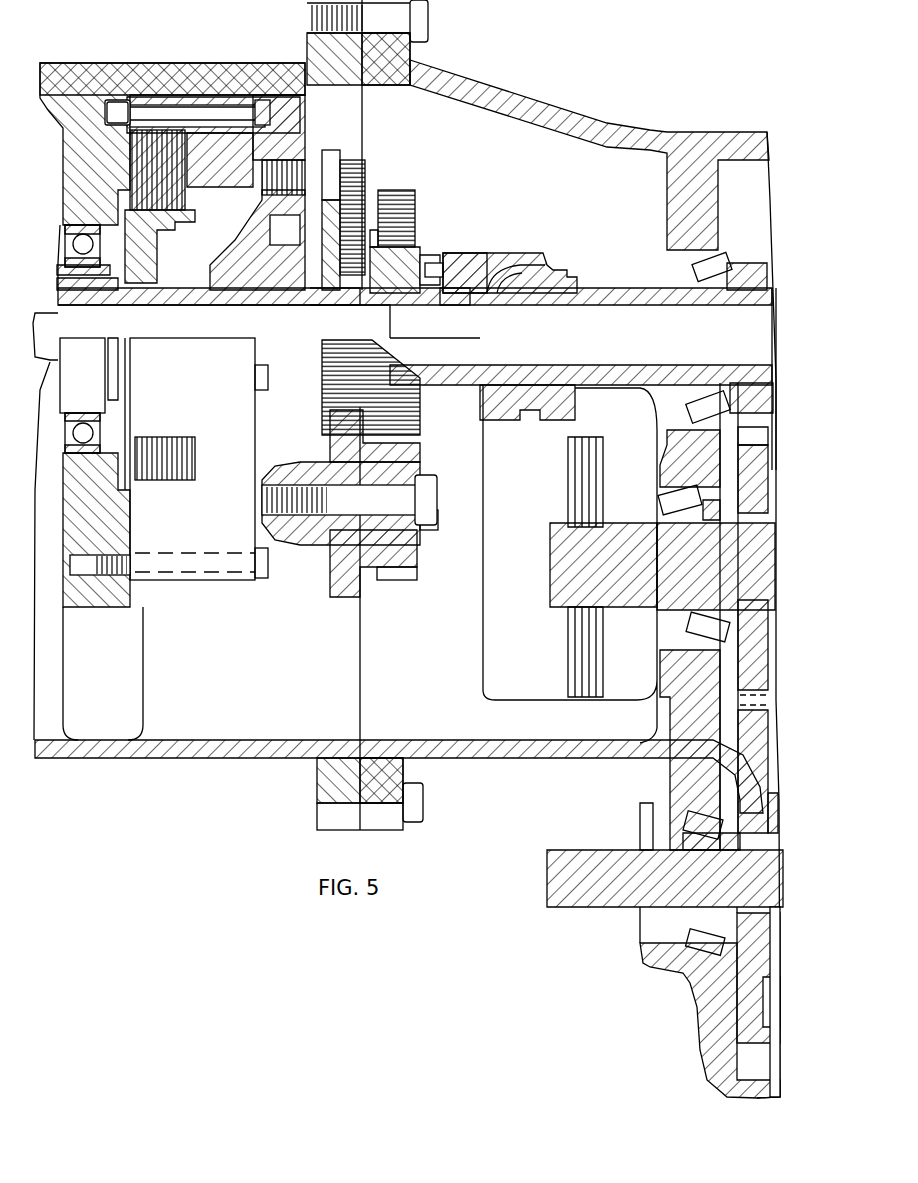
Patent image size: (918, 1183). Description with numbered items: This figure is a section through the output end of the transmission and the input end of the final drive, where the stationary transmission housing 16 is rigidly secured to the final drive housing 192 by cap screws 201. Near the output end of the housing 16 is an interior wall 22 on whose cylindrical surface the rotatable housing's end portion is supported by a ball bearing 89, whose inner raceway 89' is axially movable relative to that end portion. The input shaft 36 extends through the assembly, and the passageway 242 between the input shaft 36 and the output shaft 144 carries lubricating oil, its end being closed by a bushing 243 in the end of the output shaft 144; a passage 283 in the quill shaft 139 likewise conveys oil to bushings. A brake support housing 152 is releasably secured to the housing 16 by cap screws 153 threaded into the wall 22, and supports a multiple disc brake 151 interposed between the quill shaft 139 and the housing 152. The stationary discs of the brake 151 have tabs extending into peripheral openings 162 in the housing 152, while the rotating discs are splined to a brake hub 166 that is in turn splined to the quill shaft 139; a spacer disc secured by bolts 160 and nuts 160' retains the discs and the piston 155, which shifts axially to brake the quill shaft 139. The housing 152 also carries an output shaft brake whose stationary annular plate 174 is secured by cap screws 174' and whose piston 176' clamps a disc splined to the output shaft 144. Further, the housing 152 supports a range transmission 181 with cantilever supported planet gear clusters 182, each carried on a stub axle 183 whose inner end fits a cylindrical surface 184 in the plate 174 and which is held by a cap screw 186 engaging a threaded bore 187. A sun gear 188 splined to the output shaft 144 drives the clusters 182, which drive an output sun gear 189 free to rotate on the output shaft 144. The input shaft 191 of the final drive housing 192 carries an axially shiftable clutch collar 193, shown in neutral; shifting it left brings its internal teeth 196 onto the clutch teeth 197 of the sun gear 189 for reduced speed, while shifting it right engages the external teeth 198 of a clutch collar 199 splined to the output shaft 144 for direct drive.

The stationary transmission housing 16 is at (160, 63).
The interior wall 22 is at (140, 600).
The input shaft 36 is at (246, 332).
The ball bearing 89 is at (82, 224).
The inner raceway 89' is at (83, 411).
The quill shaft 139 is at (97, 303).
The output shaft 144 is at (162, 306).
The multiple disc hydraulic actuated brake 151 is at (187, 192).
The brake support housing 152 is at (213, 96).
The cap screws 153 is at (265, 388).
The piston 155 is at (228, 179).
The bolts 160 is at (95, 97).
The nuts 160' is at (281, 76).
The peripheral openings 162 is at (197, 450).
The brake hub 166 is at (178, 222).
The annular plate 174 is at (312, 152).
The cap screws 174' is at (369, 208).
The piston 176' is at (245, 240).
The range transmission 181 is at (420, 172).
The planet gear clusters 182 is at (418, 205).
The stub axle 183 is at (428, 478).
The cylindrical surface 184 is at (308, 472).
The cap screw 186 is at (432, 258).
The threaded bore 187 is at (265, 495).
The sun gear 188 is at (345, 305).
The output sun gear 189 is at (410, 301).
The input shaft 191 is at (633, 289).
The final drive housing 192 is at (645, 120).
The clutch collar 193 is at (535, 255).
The internal teeth 196 is at (457, 303).
The clutch teeth 197 is at (436, 265).
The external teeth 198 is at (481, 268).
The clutch collar 199 is at (515, 303).
The cap screws 201 is at (430, 15).
The passageway 242 is at (270, 310).
The bushing 243 is at (483, 306).
The passage 283 is at (58, 298).